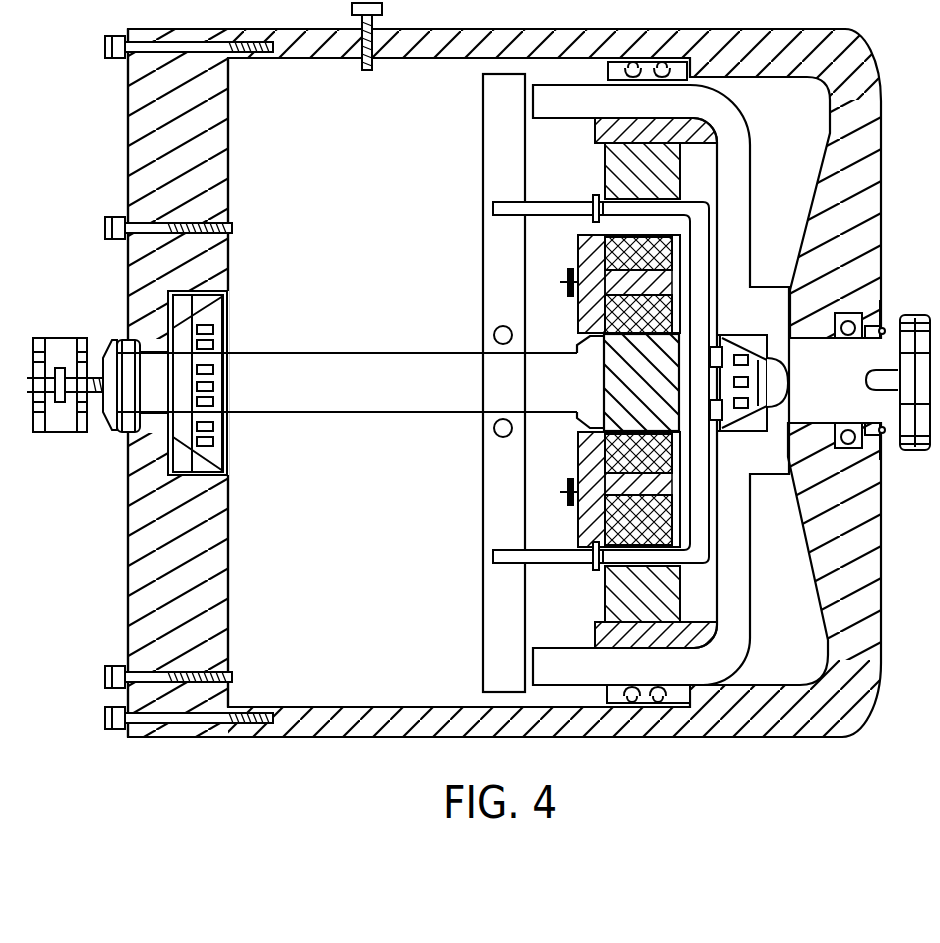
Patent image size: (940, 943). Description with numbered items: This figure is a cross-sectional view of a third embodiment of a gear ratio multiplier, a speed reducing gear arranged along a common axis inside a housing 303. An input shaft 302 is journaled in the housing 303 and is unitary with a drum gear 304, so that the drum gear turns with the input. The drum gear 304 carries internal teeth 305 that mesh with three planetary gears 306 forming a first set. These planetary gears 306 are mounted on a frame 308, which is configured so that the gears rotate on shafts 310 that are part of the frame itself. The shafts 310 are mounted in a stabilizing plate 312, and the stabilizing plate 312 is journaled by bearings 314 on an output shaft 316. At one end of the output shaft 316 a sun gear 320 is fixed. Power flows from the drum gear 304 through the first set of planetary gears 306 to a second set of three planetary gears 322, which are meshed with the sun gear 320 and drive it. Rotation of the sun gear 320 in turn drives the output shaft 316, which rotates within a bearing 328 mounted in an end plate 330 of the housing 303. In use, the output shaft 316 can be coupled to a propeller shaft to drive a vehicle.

The input shaft 302 is at (895, 315).
The housing 303 is at (866, 36).
The drum gear 304 is at (752, 121).
The internal teeth 305 is at (598, 131).
The planetary gears 306 is at (603, 172).
The frame 308 is at (692, 201).
The shafts 310 is at (500, 217).
The stabilizing plate 312 is at (483, 280).
The bearings 314 is at (483, 337).
The output shaft 316 is at (335, 352).
The sun gear 320 is at (578, 326).
The second set of planetary gears 322 is at (578, 259).
The bearing 328 is at (229, 323).
The end plate 330 is at (238, 141).